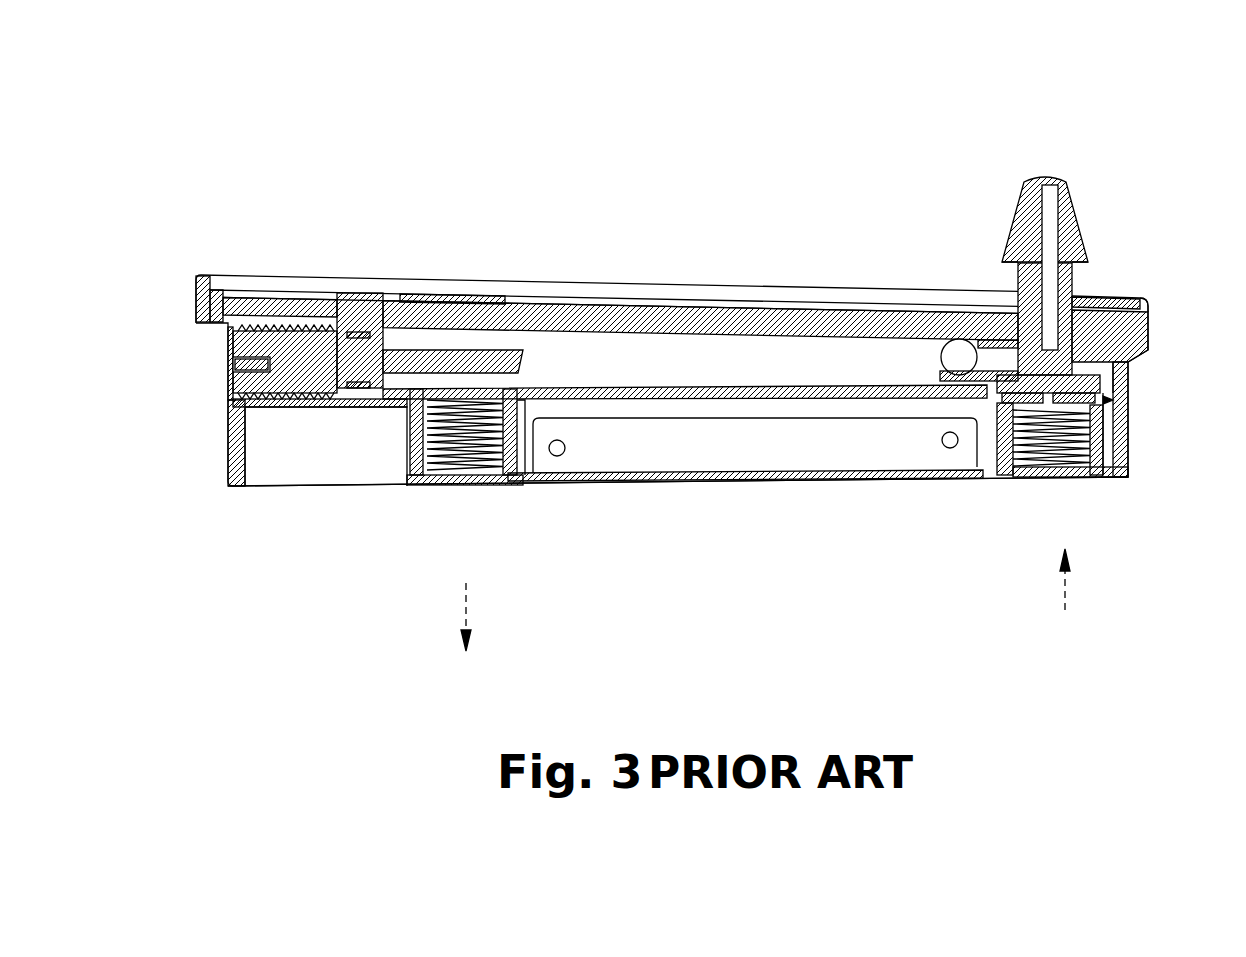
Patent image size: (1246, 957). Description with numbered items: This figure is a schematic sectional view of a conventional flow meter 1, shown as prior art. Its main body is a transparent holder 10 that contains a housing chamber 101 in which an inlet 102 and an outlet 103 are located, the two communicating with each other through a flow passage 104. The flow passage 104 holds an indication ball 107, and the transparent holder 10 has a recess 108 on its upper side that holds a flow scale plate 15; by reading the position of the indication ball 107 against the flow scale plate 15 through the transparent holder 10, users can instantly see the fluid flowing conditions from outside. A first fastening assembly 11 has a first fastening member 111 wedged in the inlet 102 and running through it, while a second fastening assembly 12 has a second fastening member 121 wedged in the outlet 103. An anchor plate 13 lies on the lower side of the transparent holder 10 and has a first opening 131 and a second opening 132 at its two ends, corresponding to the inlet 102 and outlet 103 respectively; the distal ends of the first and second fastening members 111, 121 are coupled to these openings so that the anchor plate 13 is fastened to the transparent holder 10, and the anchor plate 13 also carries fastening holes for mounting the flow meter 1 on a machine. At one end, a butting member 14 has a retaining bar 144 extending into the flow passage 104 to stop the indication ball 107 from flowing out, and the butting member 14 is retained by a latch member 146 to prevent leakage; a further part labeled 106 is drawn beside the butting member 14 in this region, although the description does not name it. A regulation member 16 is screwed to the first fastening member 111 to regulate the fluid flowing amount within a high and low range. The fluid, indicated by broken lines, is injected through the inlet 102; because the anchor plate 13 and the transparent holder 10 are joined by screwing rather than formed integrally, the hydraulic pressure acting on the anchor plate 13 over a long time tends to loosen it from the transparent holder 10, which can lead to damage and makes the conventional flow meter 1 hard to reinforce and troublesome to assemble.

The flow meter 1 is at (703, 170).
The transparent holder 10 is at (1127, 370).
The first fastening assembly 11 is at (1110, 400).
The housing chamber 101 is at (982, 482).
The inlet 102 is at (1130, 472).
The outlet 103 is at (528, 470).
The flow passage 104 is at (662, 335).
The sealing plate 106 is at (267, 398).
The indication ball 107 is at (952, 358).
The recess 108 is at (1147, 302).
The first fastening member 111 is at (1018, 297).
The second fastening assembly 12 is at (403, 408).
The second fastening member 121 is at (418, 407).
The anchor plate 13 is at (777, 478).
The first opening 131 is at (1105, 480).
The second opening 132 is at (422, 470).
The butting member 14 is at (220, 343).
The retaining bar 144 is at (538, 338).
The latch member 146 is at (223, 482).
The flow scale plate 15 is at (468, 300).
The regulation member 16 is at (962, 128).